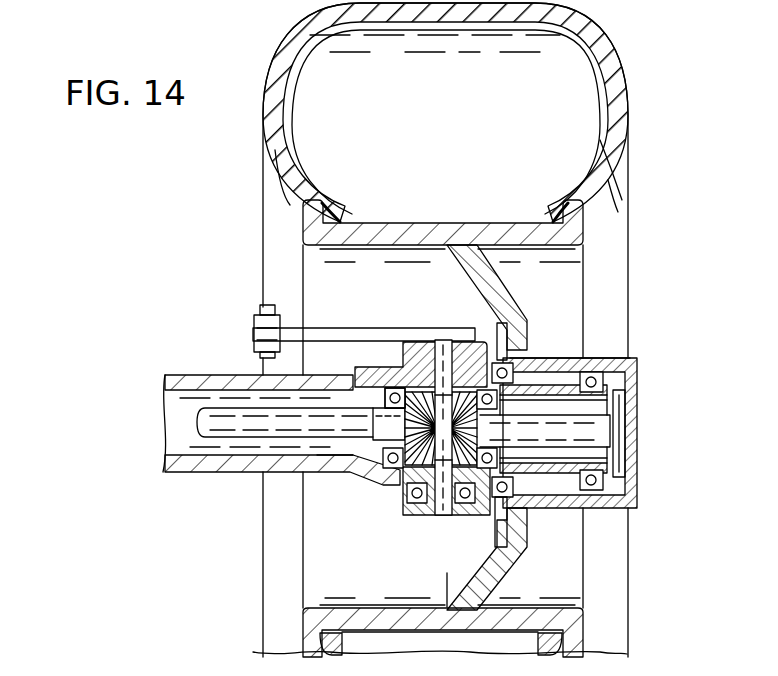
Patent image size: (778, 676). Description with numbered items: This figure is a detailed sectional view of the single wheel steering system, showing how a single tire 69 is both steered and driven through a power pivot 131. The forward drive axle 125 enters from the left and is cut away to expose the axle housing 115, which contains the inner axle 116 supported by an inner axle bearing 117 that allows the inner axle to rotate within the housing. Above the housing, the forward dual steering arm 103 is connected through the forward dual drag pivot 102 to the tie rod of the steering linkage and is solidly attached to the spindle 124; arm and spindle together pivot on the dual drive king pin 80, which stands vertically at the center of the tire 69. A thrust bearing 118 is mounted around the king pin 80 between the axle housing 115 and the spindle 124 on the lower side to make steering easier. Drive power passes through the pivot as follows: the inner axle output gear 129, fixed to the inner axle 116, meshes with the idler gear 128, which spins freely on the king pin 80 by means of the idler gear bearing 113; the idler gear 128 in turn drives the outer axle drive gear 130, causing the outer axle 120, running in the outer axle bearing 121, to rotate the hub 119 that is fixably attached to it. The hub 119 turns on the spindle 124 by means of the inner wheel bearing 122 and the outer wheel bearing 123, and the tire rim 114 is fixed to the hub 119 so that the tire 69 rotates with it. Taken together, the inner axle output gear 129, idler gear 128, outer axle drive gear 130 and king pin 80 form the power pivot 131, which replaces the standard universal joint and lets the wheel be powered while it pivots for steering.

The tire 69 is at (628, 98).
The tire rim 114 is at (515, 577).
The axle housing 115 is at (203, 375).
The inner axle 116 is at (238, 437).
The inner axle bearing 117 is at (322, 457).
The forward dual drag pivot 102 is at (267, 305).
The forward dual steering arm 103 is at (325, 328).
The idler gear bearing 113 is at (421, 364).
The thrust bearing 118 is at (392, 502).
The inner axle output gear 129 is at (375, 425).
The dual drive king pin 80 is at (442, 515).
The hub 119 is at (597, 510).
The outer axle 120 is at (585, 427).
The outer axle bearing 121 is at (502, 408).
The inner wheel bearing 122 is at (507, 355).
The outer wheel bearing 123 is at (593, 363).
The spindle 124 is at (420, 515).
The idler gear 128 is at (437, 380).
The outer axle drive gear 130 is at (487, 510).
The forward drive axle 125 is at (203, 479).
The power pivot 131 is at (391, 476).